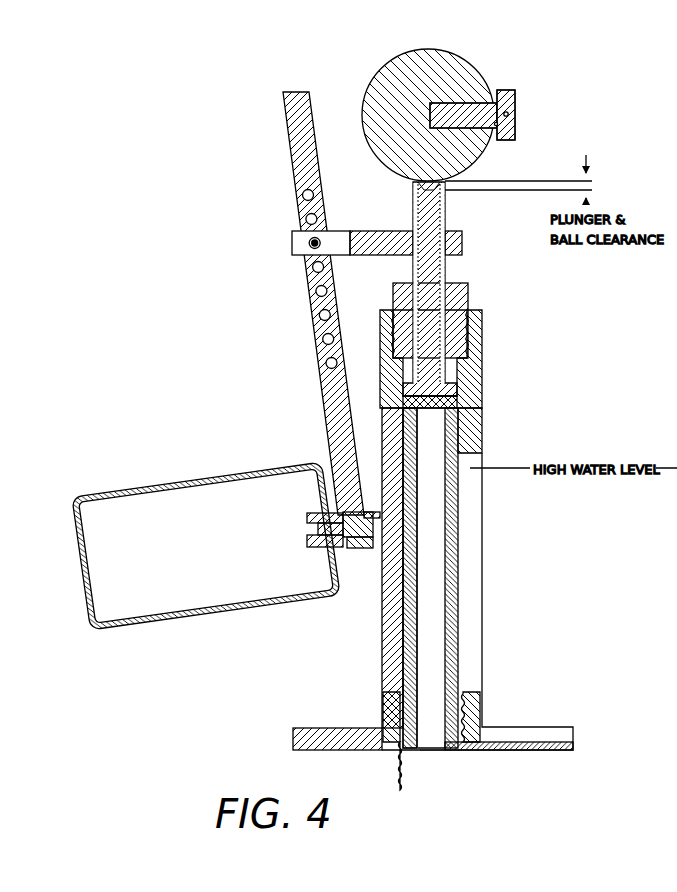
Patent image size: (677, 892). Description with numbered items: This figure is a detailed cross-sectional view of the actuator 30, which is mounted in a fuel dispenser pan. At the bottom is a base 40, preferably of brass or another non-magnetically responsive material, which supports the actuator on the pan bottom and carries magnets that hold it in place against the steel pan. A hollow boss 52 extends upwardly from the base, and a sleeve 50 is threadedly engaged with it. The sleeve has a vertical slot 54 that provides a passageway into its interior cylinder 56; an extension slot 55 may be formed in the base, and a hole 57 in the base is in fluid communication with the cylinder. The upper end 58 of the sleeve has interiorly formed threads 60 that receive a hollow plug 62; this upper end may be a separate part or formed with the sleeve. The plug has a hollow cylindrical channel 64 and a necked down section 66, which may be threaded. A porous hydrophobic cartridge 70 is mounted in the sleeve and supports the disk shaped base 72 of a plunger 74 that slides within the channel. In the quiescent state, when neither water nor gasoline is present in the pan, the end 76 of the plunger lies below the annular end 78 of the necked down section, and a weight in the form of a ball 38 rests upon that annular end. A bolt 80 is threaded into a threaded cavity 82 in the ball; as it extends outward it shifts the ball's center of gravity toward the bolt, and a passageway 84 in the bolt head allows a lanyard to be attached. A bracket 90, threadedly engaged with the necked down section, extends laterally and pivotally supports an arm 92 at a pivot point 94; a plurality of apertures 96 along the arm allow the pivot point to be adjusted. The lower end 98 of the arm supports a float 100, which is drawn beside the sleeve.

The actuator 30 is at (516, 804).
The ball 38 is at (425, 44).
The base 40 is at (312, 728).
The sleeve 50 is at (383, 658).
The hollow boss 52 is at (383, 699).
The vertical slot 54 is at (477, 568).
The extension slot 55 is at (527, 730).
The interior cylinder 56 is at (408, 632).
The hole 57 is at (428, 751).
The upper end 58 is at (482, 353).
The threads 60 is at (482, 320).
The hollow plug 62 is at (468, 278).
The hollow cylindrical channel 64 is at (414, 284).
The necked down section 66 is at (447, 212).
The porous hydrophobic cartridge 70 is at (460, 525).
The disk shaped base 72 is at (432, 398).
The plunger 74 is at (412, 300).
The end 76 is at (413, 185).
The annular end 78 is at (450, 181).
The bolt 80 is at (516, 127).
The threaded cavity 82 is at (480, 107).
The passageway 84 is at (508, 111).
The bracket 90 is at (462, 243).
The arm 92 is at (292, 163).
The pivot point 94 is at (309, 252).
The apertures 96 is at (304, 197).
The lower end 98 is at (356, 550).
The float 100 is at (248, 460).